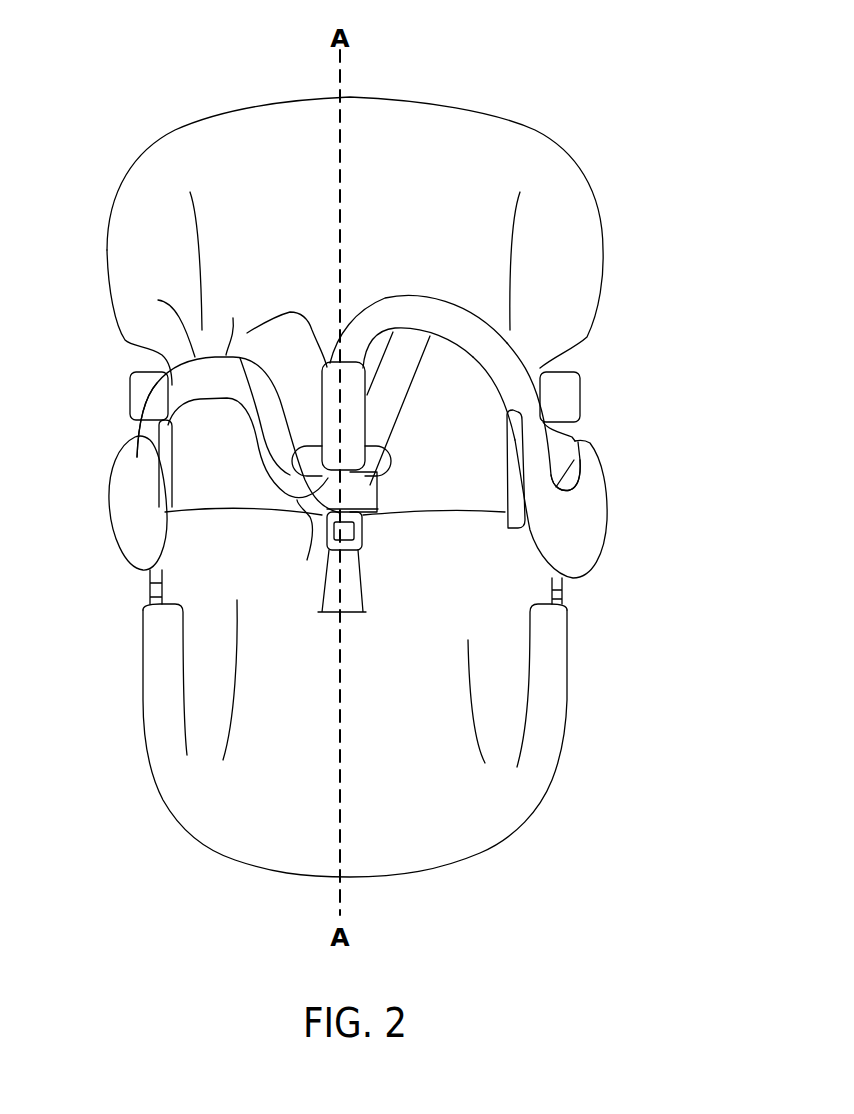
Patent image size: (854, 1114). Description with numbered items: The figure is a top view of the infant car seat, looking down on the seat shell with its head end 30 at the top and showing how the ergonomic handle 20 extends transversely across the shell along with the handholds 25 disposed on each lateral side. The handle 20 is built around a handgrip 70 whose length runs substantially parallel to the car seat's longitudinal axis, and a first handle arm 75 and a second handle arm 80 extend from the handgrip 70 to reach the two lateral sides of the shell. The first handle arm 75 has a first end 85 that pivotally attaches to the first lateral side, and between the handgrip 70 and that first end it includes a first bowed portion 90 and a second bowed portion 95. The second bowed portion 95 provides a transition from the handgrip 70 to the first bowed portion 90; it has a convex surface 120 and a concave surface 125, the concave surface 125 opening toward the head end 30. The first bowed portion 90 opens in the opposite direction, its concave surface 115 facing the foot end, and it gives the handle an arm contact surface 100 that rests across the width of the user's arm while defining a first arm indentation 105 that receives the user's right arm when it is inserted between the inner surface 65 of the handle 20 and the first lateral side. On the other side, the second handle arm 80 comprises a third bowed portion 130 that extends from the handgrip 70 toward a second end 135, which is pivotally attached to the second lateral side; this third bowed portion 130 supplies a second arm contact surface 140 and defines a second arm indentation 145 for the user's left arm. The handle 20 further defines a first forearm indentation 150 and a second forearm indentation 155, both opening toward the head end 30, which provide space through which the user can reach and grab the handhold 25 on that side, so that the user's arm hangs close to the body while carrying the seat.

The ergonomic handle 20 is at (349, 370).
The handhold 25 is at (133, 395).
The head end 30 is at (378, 92).
The inner surface 65 is at (175, 482).
The handgrip 70 is at (370, 480).
The first handle arm 75 is at (159, 320).
The second handle arm 80 is at (390, 297).
The first end 85 is at (142, 543).
The first bowed portion 90 is at (238, 435).
The second bowed portion 95 is at (310, 527).
The arm contact surface 100 is at (155, 487).
The first arm indentation 105 is at (226, 482).
The concave surface 115 is at (228, 398).
The convex surface 120 is at (266, 440).
The concave surface 125 is at (300, 470).
The third bowed portion 130 is at (433, 318).
The second end 135 is at (578, 547).
The arm contact surface 140 is at (512, 480).
The second arm indentation 145 is at (414, 412).
The first forearm indentation 150 is at (132, 434).
The second forearm indentation 155 is at (566, 467).